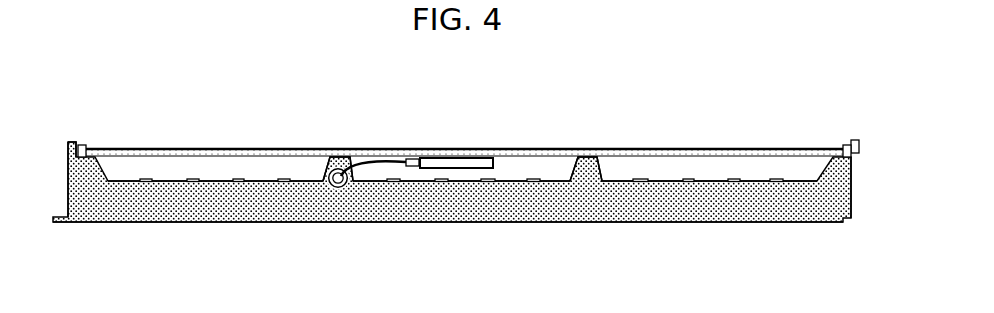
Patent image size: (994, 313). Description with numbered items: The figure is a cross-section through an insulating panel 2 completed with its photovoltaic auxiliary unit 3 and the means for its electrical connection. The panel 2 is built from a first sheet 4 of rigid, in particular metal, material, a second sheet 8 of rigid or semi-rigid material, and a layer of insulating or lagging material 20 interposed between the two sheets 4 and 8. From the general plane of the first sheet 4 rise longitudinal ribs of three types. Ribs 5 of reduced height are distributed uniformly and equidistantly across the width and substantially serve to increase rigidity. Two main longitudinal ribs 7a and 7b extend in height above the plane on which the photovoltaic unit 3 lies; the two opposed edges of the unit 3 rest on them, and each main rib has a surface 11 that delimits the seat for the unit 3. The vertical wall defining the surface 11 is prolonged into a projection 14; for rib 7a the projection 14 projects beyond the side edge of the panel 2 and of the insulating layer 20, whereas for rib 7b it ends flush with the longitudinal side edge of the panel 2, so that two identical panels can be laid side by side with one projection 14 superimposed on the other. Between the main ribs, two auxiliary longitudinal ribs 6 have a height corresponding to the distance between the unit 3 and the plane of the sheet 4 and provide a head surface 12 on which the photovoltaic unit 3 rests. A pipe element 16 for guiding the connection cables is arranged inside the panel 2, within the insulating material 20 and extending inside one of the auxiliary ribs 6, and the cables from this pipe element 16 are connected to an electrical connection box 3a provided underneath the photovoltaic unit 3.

The insulating panel 2 is at (461, 182).
The photovoltaic auxiliary unit 3 is at (318, 143).
The electrical connection box 3a is at (450, 163).
The first sheet 4 is at (273, 174).
The longitudinal or transversal ribs 5 is at (197, 181).
The auxiliary longitudinal ribs 6 is at (357, 160).
The first main longitudinal rib 7a is at (862, 132).
The second main longitudinal rib 7b is at (68, 132).
The second sheet 8 is at (670, 232).
The surface delimiting the seat 11 is at (80, 147).
The head surface 12 is at (341, 157).
The projection 14 is at (63, 142).
The pipe element 16 is at (343, 190).
The insulating or lagging material layer 20 is at (97, 203).